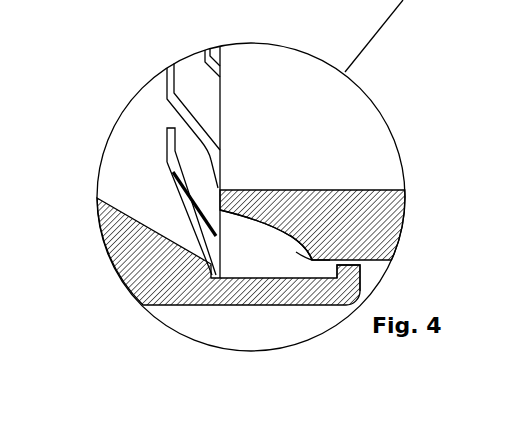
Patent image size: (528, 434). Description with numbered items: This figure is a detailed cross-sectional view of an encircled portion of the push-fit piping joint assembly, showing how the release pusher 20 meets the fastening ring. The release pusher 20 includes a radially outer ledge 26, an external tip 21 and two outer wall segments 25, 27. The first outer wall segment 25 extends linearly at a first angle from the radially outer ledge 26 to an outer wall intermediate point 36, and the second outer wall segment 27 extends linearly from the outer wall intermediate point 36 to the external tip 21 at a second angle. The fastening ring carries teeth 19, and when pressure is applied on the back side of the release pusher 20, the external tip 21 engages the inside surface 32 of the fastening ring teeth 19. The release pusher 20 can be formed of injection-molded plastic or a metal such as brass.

The teeth 19 is at (200, 195).
The release pusher 20 is at (348, 211).
The external tip 21 is at (222, 152).
The first outer wall segment 25 is at (304, 262).
The radially outer ledge 26 is at (325, 268).
The second outer wall segment 27 is at (263, 226).
The inside surface 32 is at (208, 193).
The outer wall intermediate point 36 is at (303, 238).